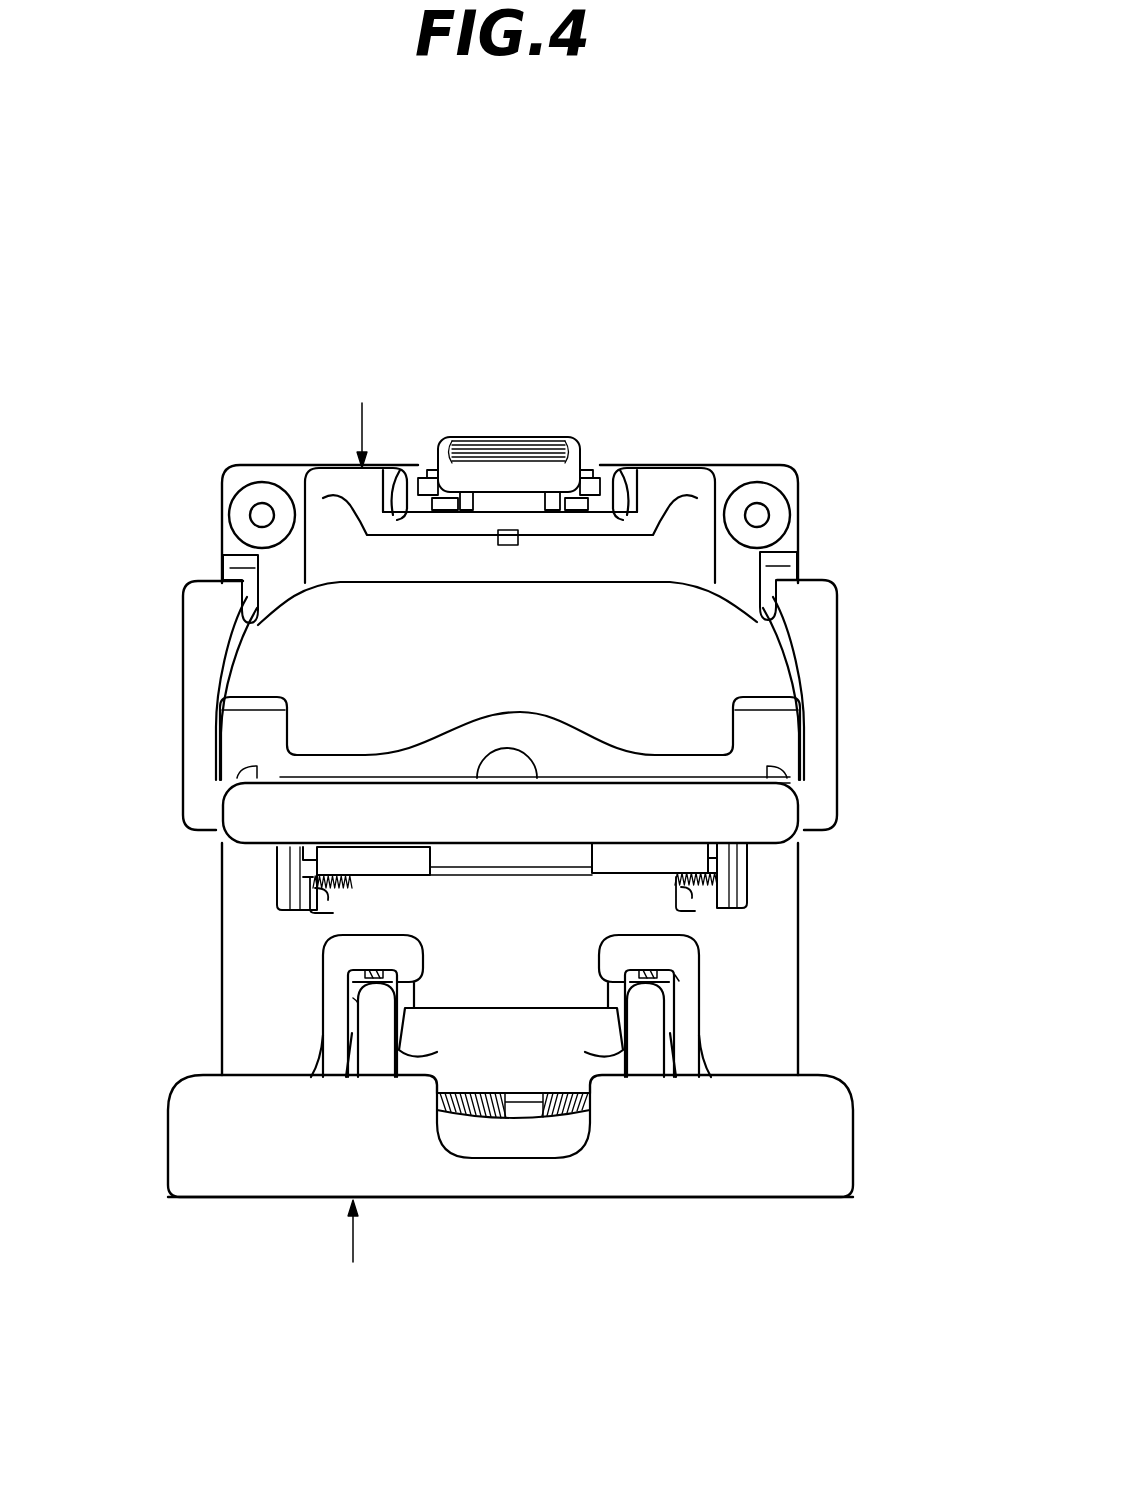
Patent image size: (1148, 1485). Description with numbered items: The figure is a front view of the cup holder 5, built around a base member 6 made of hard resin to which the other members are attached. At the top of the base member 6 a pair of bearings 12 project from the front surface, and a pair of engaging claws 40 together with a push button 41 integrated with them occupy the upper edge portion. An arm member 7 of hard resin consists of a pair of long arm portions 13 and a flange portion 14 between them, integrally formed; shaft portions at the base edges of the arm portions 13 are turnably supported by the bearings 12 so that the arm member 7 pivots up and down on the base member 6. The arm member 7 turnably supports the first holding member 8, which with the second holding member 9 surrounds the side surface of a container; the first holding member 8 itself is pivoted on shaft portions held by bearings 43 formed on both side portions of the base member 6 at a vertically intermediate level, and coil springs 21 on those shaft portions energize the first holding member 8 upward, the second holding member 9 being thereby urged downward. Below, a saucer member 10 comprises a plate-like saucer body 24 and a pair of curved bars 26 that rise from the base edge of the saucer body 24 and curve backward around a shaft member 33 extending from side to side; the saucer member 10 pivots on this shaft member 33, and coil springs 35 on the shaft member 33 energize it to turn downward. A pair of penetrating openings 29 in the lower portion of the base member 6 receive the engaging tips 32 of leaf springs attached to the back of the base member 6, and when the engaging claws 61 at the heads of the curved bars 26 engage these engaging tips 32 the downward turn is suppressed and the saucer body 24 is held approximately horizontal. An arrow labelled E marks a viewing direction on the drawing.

The cup holder 5 is at (270, 337).
The viewing direction E is at (356, 831).
The base member 6 is at (768, 466).
The arm member 7 is at (184, 674).
The first holding member 8 is at (416, 874).
The second holding member 9 is at (240, 851).
The saucer member 10 is at (239, 1199).
The bearings 12 is at (233, 557).
The arm portions 13 is at (198, 583).
The flange portion 14 is at (703, 607).
The coil springs 21 is at (370, 928).
The saucer body 24 is at (835, 1148).
The curved bars 26 is at (370, 1010).
The penetrating openings 29 is at (415, 992).
The engaging tip 32 is at (307, 930).
The shaft member 33 is at (510, 1112).
The coil springs 35 is at (458, 1120).
The engaging claws 40 is at (430, 475).
The push button 41 is at (497, 455).
The bearings 43 is at (280, 877).
The engaging claw 61 is at (353, 998).